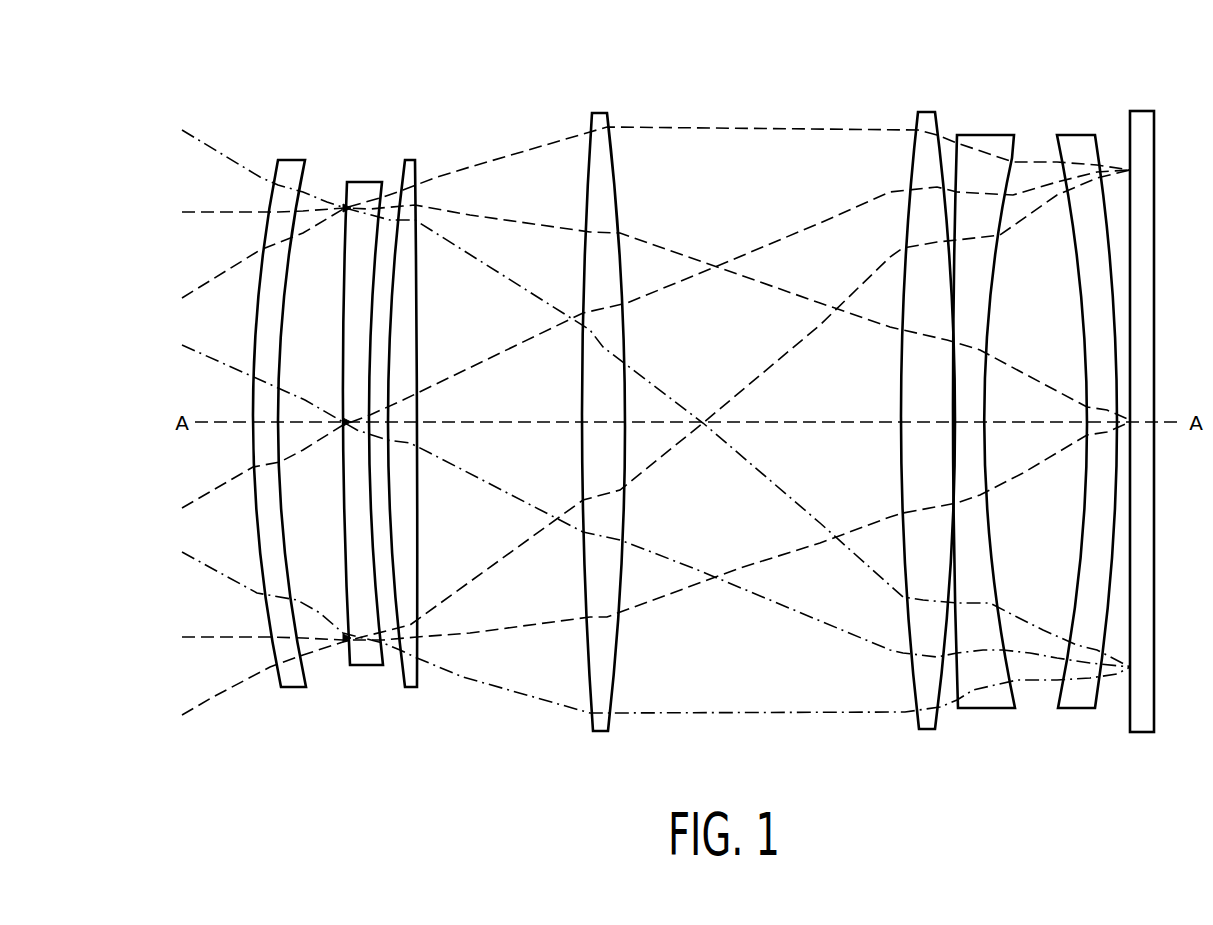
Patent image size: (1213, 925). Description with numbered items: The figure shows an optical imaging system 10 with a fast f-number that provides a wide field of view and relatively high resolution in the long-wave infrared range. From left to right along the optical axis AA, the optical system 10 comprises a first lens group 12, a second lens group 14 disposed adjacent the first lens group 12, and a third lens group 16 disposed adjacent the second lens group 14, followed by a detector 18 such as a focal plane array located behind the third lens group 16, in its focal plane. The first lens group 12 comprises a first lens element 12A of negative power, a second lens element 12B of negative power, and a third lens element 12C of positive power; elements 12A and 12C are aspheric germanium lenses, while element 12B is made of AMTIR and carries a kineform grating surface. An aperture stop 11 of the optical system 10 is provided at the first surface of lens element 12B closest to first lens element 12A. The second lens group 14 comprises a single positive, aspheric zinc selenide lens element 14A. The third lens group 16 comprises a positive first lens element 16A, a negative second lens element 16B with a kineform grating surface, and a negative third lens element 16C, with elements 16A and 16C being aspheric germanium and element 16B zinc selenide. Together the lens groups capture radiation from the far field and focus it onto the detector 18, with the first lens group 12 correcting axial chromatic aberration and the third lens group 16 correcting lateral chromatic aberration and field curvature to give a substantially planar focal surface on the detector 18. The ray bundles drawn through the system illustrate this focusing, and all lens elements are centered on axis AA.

The optical system 10 is at (563, 115).
The aperture stop 11 is at (345, 543).
The first lens group 12 is at (361, 170).
The first lens element 12A is at (287, 689).
The second lens element 12B is at (366, 667).
The third lens element 12C is at (413, 689).
The second lens group 14 is at (632, 115).
The lens element 14A is at (601, 732).
The third lens group 16 is at (996, 106).
The first lens element 16A is at (926, 730).
The second lens element 16B is at (987, 710).
The third lens element 16C is at (1072, 710).
The detector 18 is at (1137, 108).